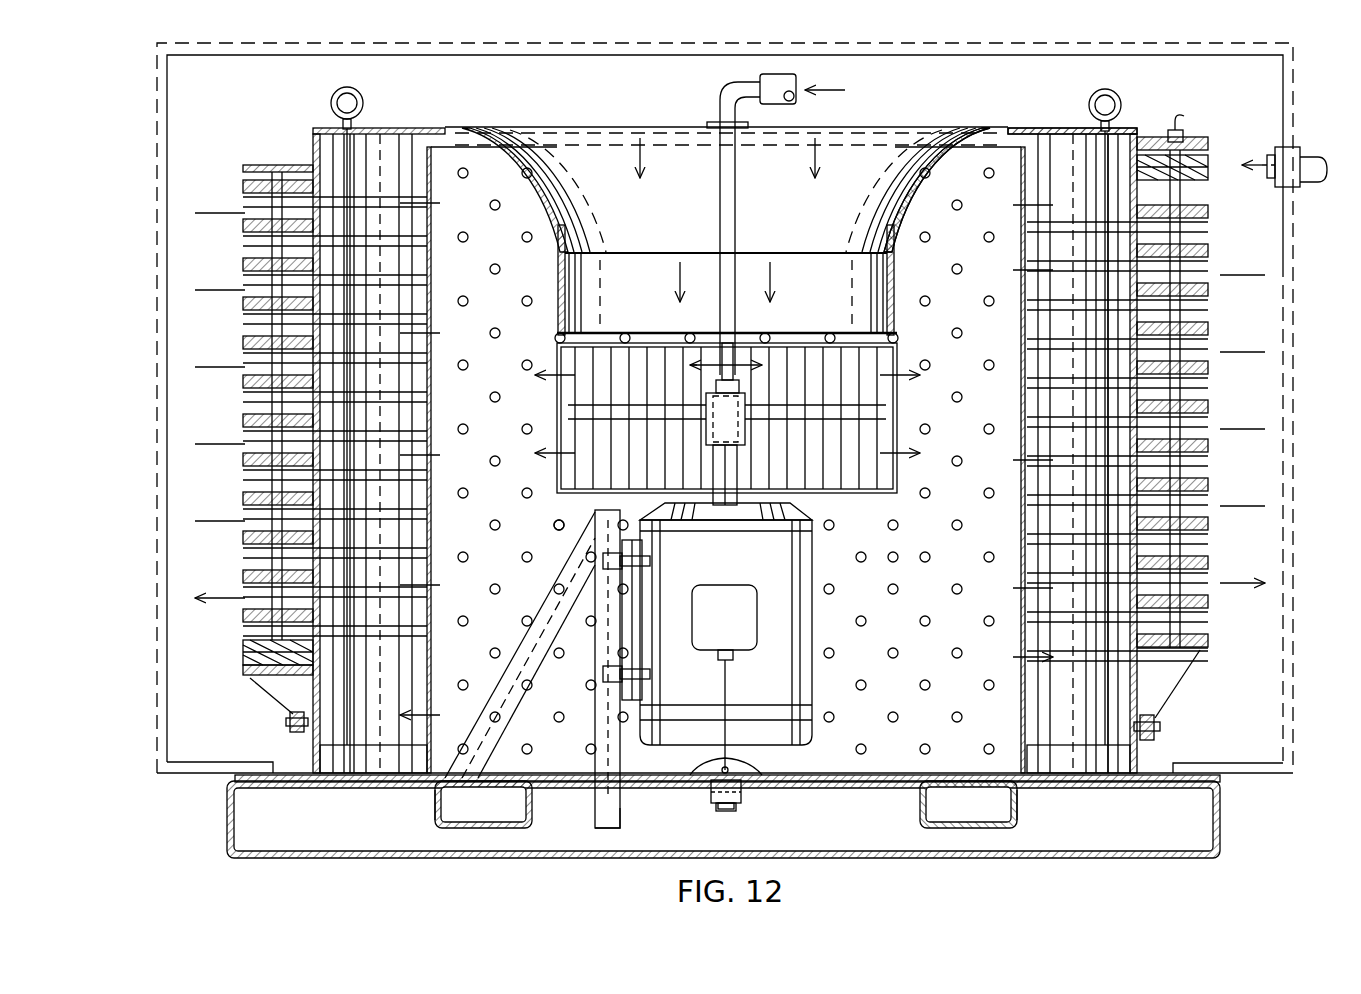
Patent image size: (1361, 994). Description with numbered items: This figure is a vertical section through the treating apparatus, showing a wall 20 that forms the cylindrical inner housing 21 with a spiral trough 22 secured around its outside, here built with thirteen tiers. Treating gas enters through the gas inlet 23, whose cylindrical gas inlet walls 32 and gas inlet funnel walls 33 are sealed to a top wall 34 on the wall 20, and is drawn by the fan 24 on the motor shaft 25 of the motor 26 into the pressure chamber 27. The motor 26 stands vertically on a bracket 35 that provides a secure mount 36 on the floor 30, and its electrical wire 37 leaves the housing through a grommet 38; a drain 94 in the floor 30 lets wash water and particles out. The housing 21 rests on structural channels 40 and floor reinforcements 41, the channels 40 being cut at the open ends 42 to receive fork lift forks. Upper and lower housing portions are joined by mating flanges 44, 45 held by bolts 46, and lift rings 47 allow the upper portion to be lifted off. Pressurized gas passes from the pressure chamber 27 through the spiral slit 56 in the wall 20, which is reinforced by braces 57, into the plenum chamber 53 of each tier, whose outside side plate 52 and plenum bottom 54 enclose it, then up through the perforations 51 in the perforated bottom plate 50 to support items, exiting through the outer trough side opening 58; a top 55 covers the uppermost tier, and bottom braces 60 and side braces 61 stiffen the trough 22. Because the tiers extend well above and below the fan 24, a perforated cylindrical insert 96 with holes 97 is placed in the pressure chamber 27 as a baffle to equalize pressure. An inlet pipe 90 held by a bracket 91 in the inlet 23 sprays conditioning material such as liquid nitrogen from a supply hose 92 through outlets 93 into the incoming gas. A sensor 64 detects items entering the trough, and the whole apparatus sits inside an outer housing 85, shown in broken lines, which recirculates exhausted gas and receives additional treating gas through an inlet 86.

The wall 20 is at (313, 140).
The cylindrical inner housing 21 is at (258, 128).
The spiral trough 22 is at (1222, 182).
The gas inlet 23 is at (858, 160).
The fan 24 is at (632, 375).
The motor shaft 25 is at (748, 395).
The motor 26 is at (812, 680).
The pressure chamber 27 is at (1038, 190).
The floor 30 is at (888, 775).
The cylindrical gas inlet walls 32 is at (895, 290).
The gas inlet funnel walls 33 is at (925, 188).
The top wall 34 is at (1027, 133).
The bracket 35 is at (598, 598).
The motor mount 36 is at (620, 650).
The electrical wire 37 is at (745, 772).
The grommet 38 is at (710, 778).
The structural channels 40 is at (228, 818).
The floor reinforcements 41 is at (436, 805).
The open ends 42 is at (515, 815).
The mating flange 44 is at (1158, 722).
The mating flange 45 is at (1158, 735).
The bolts 46 is at (290, 720).
The lift rings 47 is at (330, 93).
The perforated bottom plate 50 is at (255, 487).
The perforations 51 is at (255, 565).
The outside side plate 52 is at (250, 416).
The plenum chamber 53 is at (255, 200).
The plenum bottom 54 is at (250, 325).
The top 55 is at (243, 166).
The spiral opening or slit 56 is at (318, 198).
The braces 57 is at (352, 658).
The outer trough side opening 58 is at (250, 252).
The bottom braces 60 is at (1188, 664).
The side braces 61 is at (1180, 612).
The sensor 64 is at (1183, 133).
The outer housing 85 is at (1296, 352).
The inlet 86 is at (1308, 157).
The inlet pipe 90 is at (720, 198).
The bracket 91 is at (712, 122).
The supply hose 92 is at (758, 78).
The outlets 93 is at (727, 380).
The drain 94 is at (738, 803).
The perforated cylindrical insert 96 is at (426, 172).
The holes 97 is at (553, 527).